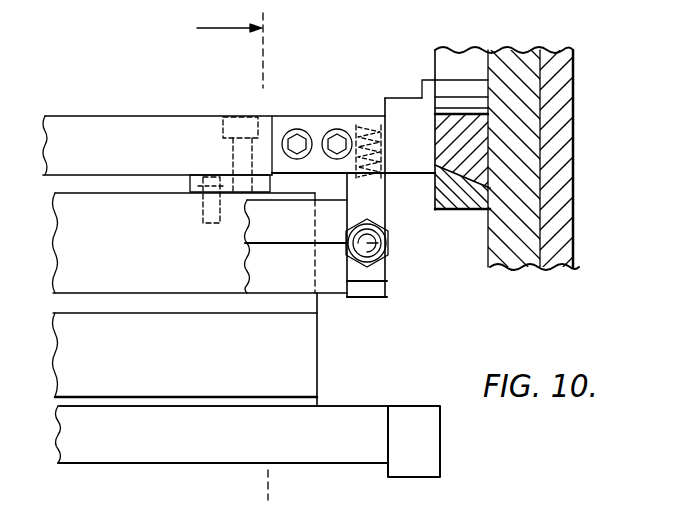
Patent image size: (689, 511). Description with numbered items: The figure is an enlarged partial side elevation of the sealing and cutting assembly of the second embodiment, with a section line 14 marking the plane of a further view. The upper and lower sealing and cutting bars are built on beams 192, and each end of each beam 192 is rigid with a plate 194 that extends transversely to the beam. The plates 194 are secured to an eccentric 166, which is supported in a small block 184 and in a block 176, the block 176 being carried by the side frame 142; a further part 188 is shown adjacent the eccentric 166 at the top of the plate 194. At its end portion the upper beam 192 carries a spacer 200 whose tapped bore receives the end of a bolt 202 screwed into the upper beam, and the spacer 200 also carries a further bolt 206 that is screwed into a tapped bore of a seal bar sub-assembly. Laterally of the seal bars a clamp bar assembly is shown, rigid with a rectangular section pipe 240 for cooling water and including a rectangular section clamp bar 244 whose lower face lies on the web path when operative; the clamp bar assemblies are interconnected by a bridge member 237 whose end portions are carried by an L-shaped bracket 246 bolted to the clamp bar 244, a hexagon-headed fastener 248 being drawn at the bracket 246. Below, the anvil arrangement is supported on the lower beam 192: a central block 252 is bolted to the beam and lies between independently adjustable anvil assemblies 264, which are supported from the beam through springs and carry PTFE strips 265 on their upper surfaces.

The section line 14- 14 is at (252, 256).
The side frame 142 is at (553, 112).
The eccentric 166 is at (445, 57).
The block 176 is at (520, 183).
The small block 184 is at (462, 160).
The retainer tab 188 is at (422, 90).
The beam 192 is at (158, 118).
The plate 194 is at (387, 112).
The spacer 200 is at (223, 185).
The bolt 202 is at (236, 124).
The bolt 206 is at (203, 211).
The bridge member 237 is at (375, 290).
The rectangular section pipe 240 is at (258, 232).
The clamp bar 244 is at (262, 270).
The L-shaped bracket 246 is at (318, 126).
The adjusting bolt 248 is at (388, 248).
The central block 252 is at (181, 403).
The anvil assembly 264 is at (302, 367).
The PTFE strip 265 is at (175, 306).